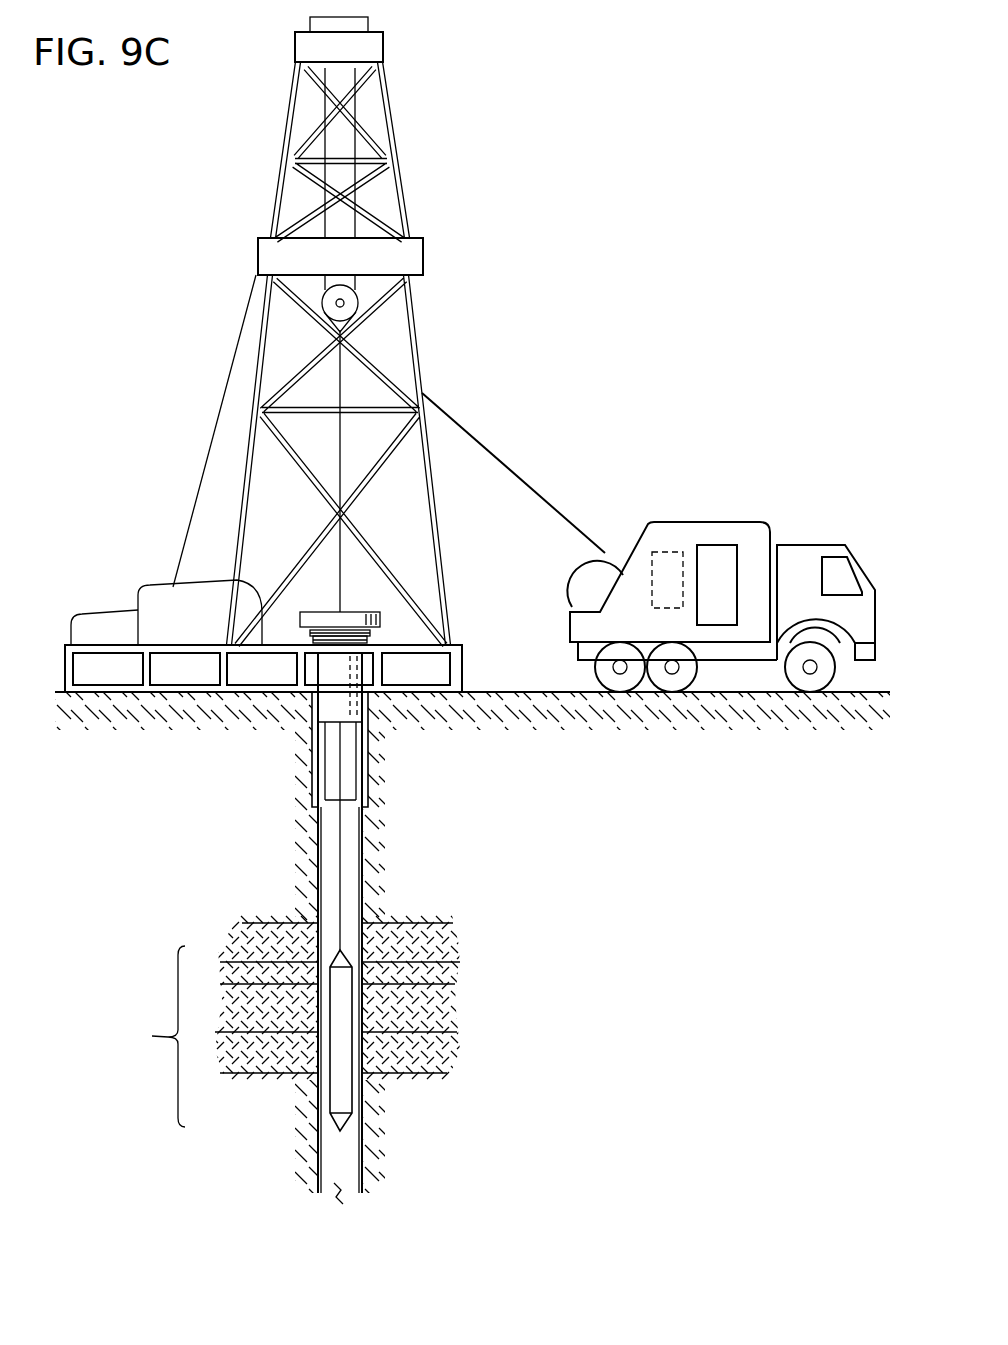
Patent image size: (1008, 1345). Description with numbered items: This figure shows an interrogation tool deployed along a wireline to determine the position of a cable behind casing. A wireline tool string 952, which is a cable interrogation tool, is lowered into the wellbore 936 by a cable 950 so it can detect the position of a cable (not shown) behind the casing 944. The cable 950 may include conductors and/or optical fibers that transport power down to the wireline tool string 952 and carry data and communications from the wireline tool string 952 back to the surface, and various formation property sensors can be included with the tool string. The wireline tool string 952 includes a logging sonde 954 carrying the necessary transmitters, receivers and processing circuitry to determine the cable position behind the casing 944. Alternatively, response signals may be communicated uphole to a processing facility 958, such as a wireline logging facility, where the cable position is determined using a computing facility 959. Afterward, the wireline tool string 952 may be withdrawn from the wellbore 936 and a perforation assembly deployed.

The wellbore 936 is at (330, 853).
The casing 944 is at (368, 833).
The cable 950 is at (463, 422).
The wireline tool string 952 is at (274, 1021).
The logging sonde 954 is at (336, 950).
The processing facility 958 is at (740, 522).
The computing facility 959 is at (660, 552).